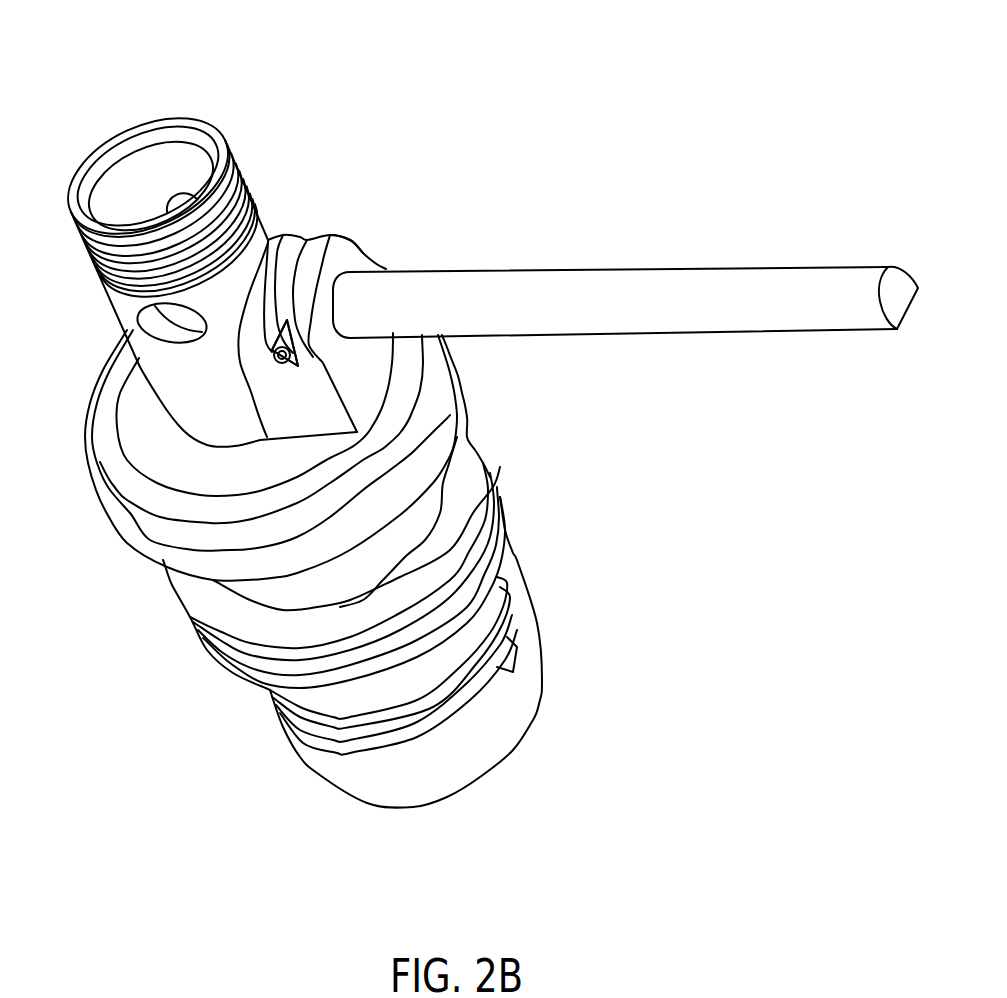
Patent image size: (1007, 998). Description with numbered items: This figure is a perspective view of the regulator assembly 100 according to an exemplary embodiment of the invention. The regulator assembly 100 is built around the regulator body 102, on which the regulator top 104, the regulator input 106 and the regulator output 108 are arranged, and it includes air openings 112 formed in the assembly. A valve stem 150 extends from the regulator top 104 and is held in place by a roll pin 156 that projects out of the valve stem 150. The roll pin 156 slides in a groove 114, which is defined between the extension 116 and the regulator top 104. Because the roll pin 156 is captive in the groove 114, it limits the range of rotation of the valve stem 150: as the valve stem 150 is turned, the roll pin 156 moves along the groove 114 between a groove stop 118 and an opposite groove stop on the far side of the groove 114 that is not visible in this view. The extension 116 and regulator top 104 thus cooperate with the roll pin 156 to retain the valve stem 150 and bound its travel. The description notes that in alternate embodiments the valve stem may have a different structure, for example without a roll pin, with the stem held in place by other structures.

The regulator assembly 100 is at (142, 710).
The regulator body 102 is at (503, 558).
The regulator top 104 is at (457, 407).
The regulator input 106 is at (490, 767).
The regulator output 108 is at (130, 138).
The air openings 112 is at (190, 193).
The groove 114 is at (307, 240).
The extension 116 is at (327, 240).
The groove stop 118 is at (283, 367).
The valve stem 150 is at (632, 268).
The roll pin 156 is at (296, 354).